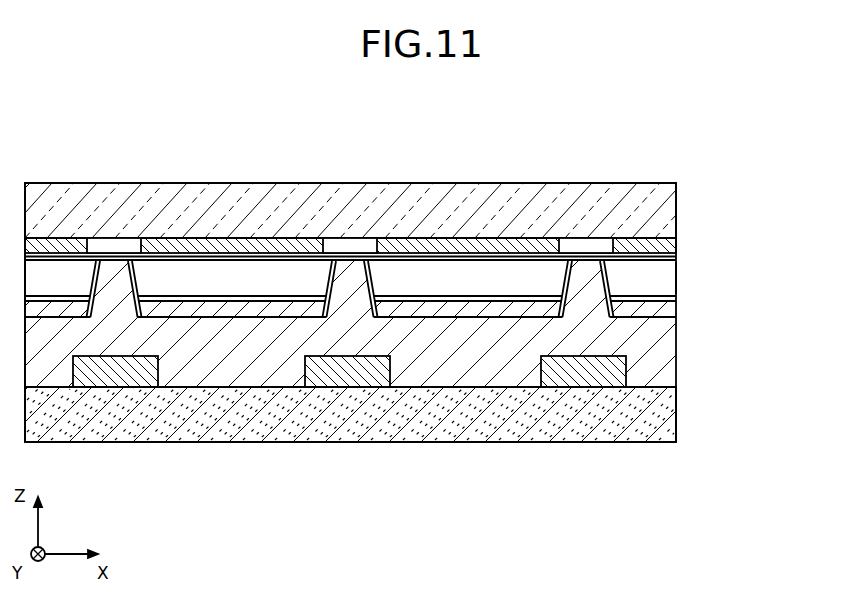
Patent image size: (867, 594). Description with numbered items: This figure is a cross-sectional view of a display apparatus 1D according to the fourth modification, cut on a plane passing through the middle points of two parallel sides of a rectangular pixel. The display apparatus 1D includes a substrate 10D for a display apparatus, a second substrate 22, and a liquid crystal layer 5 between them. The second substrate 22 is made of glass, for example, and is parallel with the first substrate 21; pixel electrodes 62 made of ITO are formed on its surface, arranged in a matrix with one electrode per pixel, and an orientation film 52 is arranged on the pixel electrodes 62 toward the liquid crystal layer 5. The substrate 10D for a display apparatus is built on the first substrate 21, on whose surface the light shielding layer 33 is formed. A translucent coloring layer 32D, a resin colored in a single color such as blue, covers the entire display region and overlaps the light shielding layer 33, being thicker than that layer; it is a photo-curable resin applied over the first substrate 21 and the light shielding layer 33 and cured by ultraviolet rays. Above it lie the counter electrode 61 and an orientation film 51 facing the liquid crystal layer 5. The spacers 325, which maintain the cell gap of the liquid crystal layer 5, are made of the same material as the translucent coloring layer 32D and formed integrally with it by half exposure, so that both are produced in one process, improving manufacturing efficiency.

The display apparatus 1D is at (664, 153).
The substrate for a display apparatus 10D is at (768, 287).
The first substrate 21 is at (672, 417).
The second substrate 22 is at (672, 212).
The translucent coloring layer 32D is at (672, 344).
The light shielding layer 33 is at (628, 378).
The spacer 325 is at (117, 270).
The liquid crystal layer 5 is at (672, 279).
The orientation film 51 is at (673, 298).
The orientation film 52 is at (676, 257).
The counter electrode 61 is at (672, 315).
The pixel electrode 62 is at (233, 247).